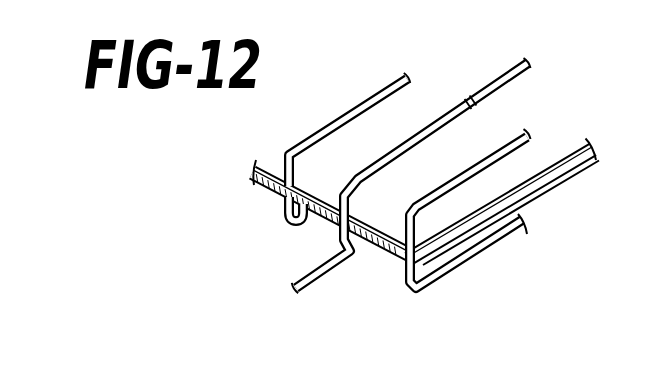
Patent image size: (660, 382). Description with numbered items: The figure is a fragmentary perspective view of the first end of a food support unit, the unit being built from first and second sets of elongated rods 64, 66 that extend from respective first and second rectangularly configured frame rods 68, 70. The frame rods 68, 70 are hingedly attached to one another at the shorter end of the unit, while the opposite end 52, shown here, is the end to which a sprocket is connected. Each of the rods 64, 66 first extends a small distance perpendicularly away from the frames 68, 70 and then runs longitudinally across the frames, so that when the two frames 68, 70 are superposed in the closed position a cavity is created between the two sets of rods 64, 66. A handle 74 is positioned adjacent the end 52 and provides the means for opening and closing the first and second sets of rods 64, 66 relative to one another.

The end 52 is at (302, 222).
The first set of elongated rods 64 is at (443, 116).
The second set of elongated rods 66 is at (412, 289).
The first rectangularly configured frame rod 68 is at (541, 170).
The second rectangularly configured frame rod 70 is at (548, 189).
The handle 74 is at (306, 287).